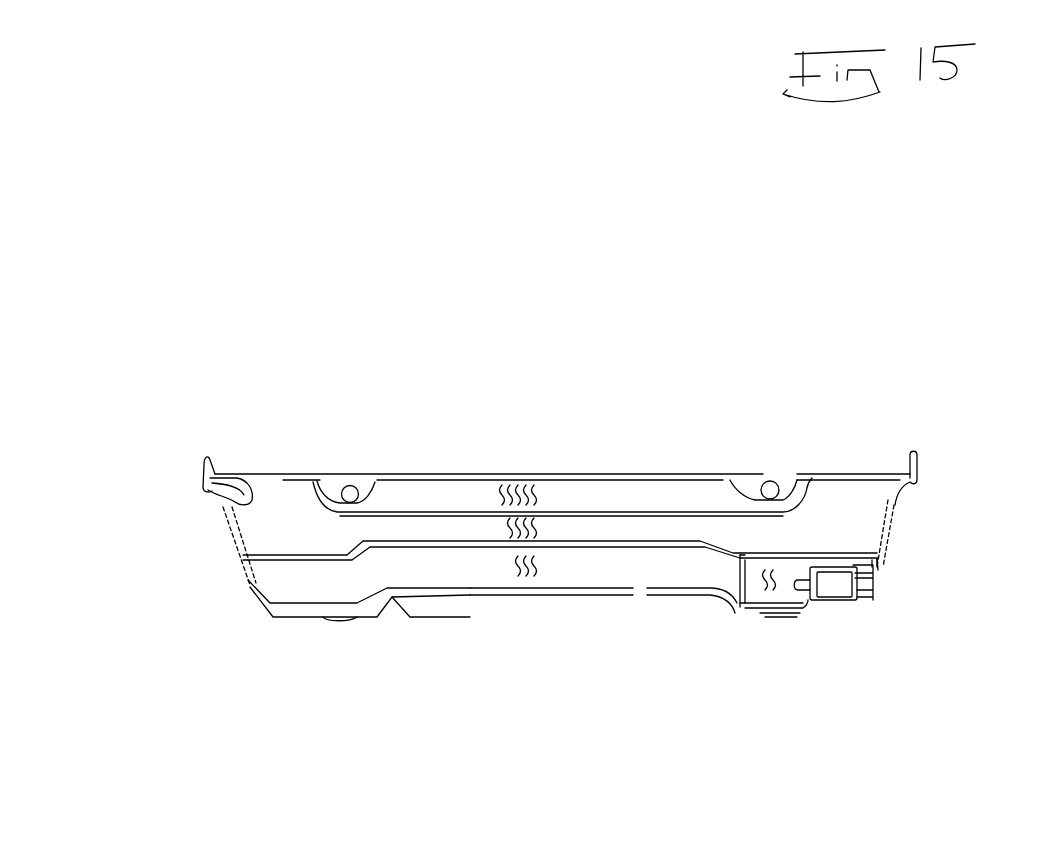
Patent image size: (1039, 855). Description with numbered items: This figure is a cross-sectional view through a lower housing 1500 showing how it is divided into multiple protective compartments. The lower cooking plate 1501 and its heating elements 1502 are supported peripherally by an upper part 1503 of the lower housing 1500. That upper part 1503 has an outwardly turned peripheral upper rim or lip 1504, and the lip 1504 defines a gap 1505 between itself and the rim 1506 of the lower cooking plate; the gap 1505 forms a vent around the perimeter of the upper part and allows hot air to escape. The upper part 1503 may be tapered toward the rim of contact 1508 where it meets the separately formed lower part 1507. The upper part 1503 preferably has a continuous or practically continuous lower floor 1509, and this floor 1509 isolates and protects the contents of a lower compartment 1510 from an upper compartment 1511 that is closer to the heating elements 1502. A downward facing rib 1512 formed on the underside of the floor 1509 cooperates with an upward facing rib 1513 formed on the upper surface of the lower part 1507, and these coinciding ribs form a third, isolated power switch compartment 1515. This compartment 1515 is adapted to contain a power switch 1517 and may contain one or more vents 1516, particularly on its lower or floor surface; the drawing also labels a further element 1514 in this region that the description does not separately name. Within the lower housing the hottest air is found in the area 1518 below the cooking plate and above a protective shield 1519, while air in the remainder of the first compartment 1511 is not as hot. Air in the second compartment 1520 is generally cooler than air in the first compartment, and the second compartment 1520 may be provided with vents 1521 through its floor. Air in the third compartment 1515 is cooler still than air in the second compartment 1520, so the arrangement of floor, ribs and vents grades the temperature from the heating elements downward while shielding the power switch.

The lower housing 1500 is at (949, 482).
The lower cooking plate 1501 is at (562, 438).
The heating elements 1502 is at (391, 446).
The upper part 1503 is at (171, 505).
The peripheral upper rim or lip 1504 is at (205, 454).
The gap 1505 is at (928, 451).
The rim of the lower cooking plate 1506 is at (837, 442).
The lower part 1507 is at (280, 595).
The rim of contact 1508 is at (173, 546).
The lower floor 1509 is at (308, 623).
The lower compartment 1510 is at (718, 600).
The upper compartment 1511 is at (693, 611).
The downward facing rib 1512 is at (562, 459).
The upward facing rib 1513 is at (774, 650).
The circuit module 1514 is at (903, 622).
The power switch compartment 1515 is at (843, 667).
The vents 1516 is at (812, 627).
The power switch 1517 is at (944, 658).
The hottest air area 1518 is at (540, 462).
The protective shield 1519 is at (560, 453).
The second compartment 1520 is at (563, 624).
The vents 1521 is at (475, 687).